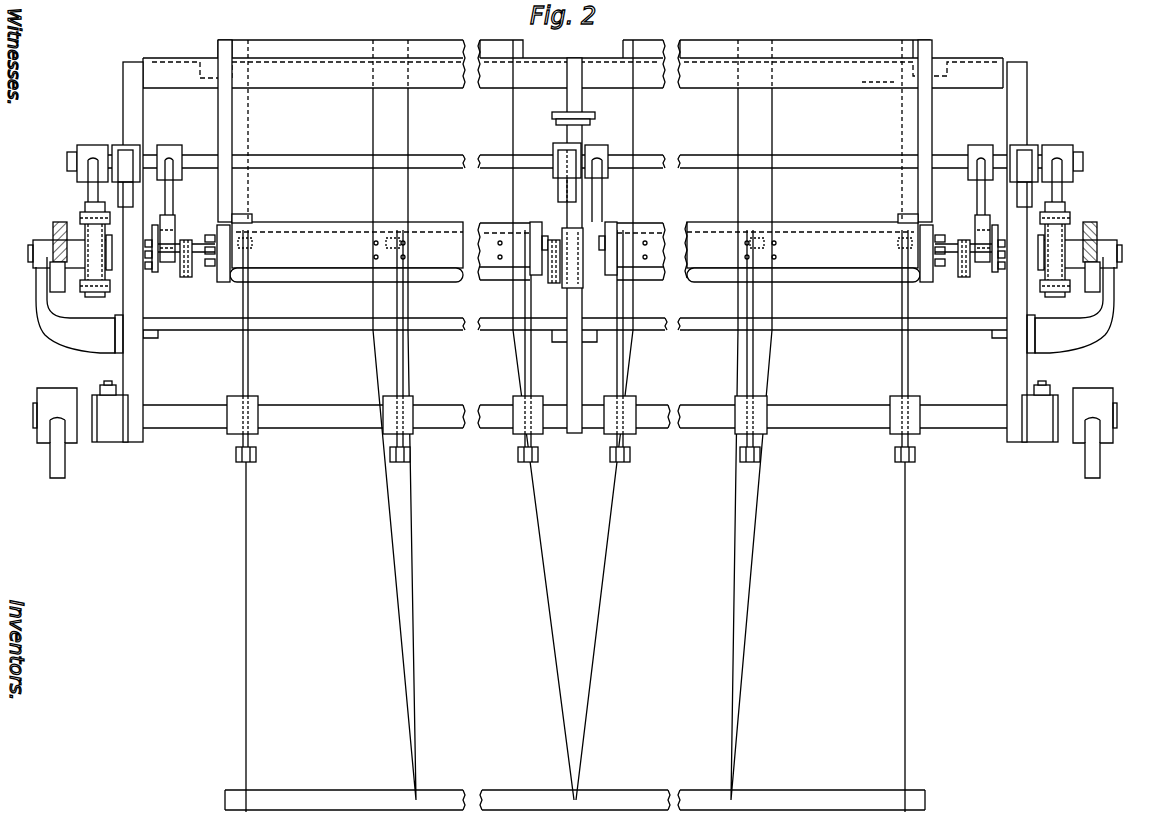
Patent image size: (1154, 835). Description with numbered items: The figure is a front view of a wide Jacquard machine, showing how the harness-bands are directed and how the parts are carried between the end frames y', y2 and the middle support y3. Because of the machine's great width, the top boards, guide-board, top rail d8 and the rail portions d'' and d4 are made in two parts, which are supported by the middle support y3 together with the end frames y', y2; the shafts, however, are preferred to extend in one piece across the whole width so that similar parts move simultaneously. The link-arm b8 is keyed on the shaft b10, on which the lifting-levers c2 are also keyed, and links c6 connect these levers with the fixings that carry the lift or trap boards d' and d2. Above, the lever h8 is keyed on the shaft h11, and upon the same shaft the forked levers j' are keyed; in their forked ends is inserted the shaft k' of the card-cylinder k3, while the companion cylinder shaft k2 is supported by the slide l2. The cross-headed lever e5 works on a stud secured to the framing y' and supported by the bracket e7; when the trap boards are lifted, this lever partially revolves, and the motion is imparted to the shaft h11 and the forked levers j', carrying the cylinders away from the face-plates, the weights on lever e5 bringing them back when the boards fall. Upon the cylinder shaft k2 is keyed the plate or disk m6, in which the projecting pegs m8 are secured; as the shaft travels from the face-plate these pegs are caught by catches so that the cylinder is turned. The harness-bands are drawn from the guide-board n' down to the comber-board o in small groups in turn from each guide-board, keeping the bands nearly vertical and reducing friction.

The top frame beam d8 is at (380, 40).
The beam inner part d'' is at (865, 74).
The shaft h11 is at (574, 151).
The card-cylinder k3 is at (575, 252).
The guide-board n' is at (575, 320).
The shaft b10 is at (575, 415).
The comber-board o is at (358, 798).
The link c6 is at (243, 356).
The lifting-lever c2 is at (258, 414).
The lift or trap board d2 is at (560, 133).
The middle support y3 is at (585, 102).
The shaft k' is at (572, 258).
The lift or trap board d' is at (583, 235).
The end frame y' is at (127, 252).
The end frame y2 is at (1018, 145).
The lever h8 is at (90, 192).
The forked lever j' is at (579, 203).
The cross-headed lever e5 is at (575, 249).
The bracket e7 is at (575, 305).
The plate or disk m6 is at (153, 226).
The shaft k2 is at (176, 270).
The slide l2 is at (186, 280).
The projecting peg m8 is at (150, 268).
The frame column d4 is at (218, 210).
The link-arm b8 is at (58, 462).